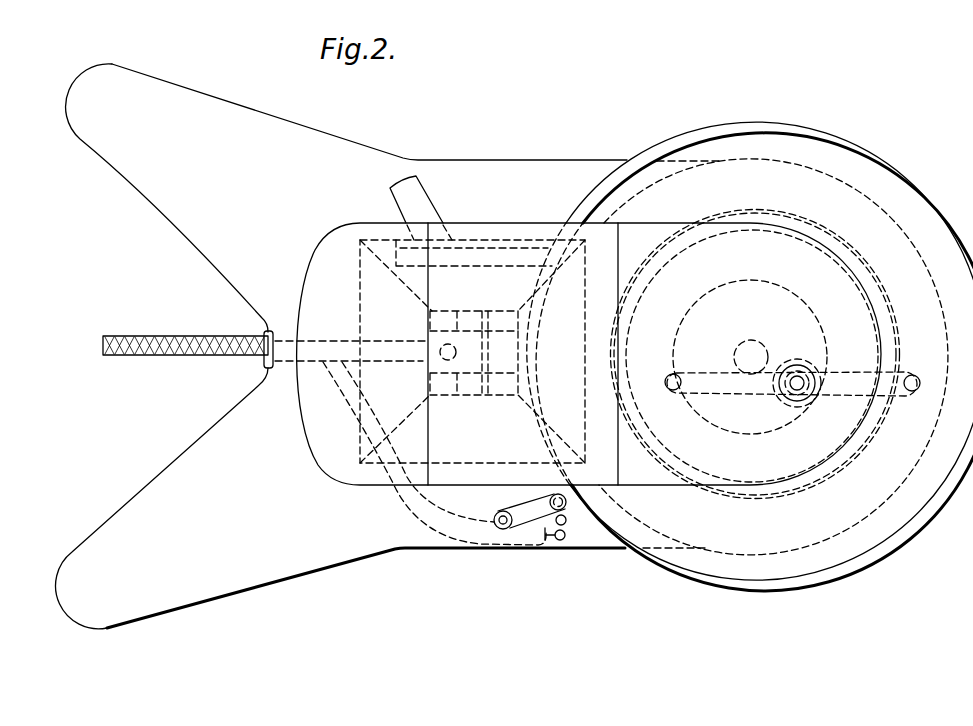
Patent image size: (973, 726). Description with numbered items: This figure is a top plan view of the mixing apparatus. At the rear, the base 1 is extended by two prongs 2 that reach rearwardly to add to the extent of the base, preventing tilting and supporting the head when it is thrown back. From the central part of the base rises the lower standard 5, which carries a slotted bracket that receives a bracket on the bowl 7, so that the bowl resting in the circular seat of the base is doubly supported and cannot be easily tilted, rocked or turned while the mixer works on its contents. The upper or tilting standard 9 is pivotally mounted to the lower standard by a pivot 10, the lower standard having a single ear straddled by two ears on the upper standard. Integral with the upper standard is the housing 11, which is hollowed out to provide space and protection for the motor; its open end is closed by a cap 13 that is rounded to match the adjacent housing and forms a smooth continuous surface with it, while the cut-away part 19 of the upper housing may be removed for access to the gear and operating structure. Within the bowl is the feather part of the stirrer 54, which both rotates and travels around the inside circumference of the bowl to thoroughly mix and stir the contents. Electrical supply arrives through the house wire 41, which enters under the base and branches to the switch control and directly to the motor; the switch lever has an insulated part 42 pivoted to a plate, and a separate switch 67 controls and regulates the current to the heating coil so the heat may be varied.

The base 1 is at (547, 165).
The prongs 2 is at (132, 105).
The lower standard 5 is at (360, 313).
The bowl 7 is at (796, 128).
The upper or tilting standard 9 is at (443, 397).
The pivot 10 is at (478, 312).
The housing 11 is at (485, 230).
The cap 13 is at (313, 268).
The cut-away part of housing 19 is at (797, 258).
The house wire 41 is at (140, 357).
The insulated part of the switch lever 42 is at (400, 193).
The feather part of the stirrer 54 is at (847, 368).
The switch 67 is at (508, 502).